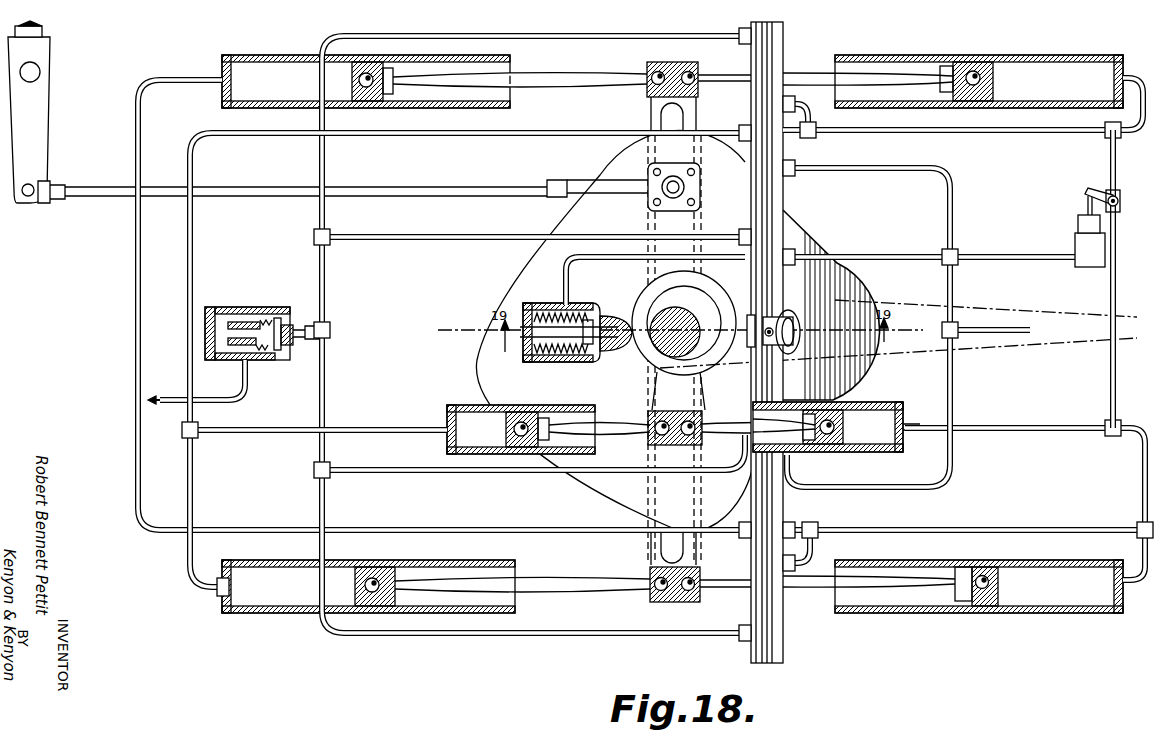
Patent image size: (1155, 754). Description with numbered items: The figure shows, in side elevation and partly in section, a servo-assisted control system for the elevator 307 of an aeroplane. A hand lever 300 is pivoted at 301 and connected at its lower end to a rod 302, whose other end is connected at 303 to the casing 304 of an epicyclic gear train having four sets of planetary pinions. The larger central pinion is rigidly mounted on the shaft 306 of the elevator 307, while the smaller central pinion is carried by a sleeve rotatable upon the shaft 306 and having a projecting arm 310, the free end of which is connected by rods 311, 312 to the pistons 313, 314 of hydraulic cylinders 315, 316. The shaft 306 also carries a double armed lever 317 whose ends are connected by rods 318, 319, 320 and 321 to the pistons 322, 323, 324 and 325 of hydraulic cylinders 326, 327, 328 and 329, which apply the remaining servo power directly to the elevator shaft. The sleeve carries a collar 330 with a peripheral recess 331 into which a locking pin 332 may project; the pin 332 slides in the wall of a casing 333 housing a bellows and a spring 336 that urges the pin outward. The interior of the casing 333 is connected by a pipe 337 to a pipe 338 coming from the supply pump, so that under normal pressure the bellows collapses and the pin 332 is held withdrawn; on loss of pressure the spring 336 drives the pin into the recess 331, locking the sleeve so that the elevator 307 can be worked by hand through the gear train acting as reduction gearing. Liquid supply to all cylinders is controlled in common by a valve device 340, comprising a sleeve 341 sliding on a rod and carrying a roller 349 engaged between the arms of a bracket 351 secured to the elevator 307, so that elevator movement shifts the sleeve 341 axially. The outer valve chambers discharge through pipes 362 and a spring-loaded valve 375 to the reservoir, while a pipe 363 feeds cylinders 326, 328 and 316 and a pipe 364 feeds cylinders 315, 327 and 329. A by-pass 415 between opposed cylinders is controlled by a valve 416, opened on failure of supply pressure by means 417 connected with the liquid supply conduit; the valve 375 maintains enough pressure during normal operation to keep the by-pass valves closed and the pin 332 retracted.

The hand lever 300 is at (44, 29).
The pivot 301 is at (40, 73).
The rod 302 is at (82, 187).
The connection 303 is at (700, 190).
The casing of epicyclic gear train 304 is at (800, 237).
The shaft of the elevator 306 is at (705, 326).
The elevator 307 is at (1007, 350).
The projecting arm 310 is at (698, 398).
The rod 311 is at (707, 428).
The rod 312 is at (604, 433).
The piston 313 is at (836, 453).
The piston 314 is at (526, 454).
The hydraulic cylinder 315 is at (865, 453).
The hydraulic cylinder 316 is at (487, 454).
The double armed lever 317 is at (698, 113).
The rod 318 is at (722, 78).
The rod 319 is at (812, 588).
The rod 320 is at (566, 586).
The rod 321 is at (540, 76).
The piston 322 is at (966, 62).
The piston 323 is at (1000, 587).
The piston 324 is at (374, 566).
The piston 325 is at (388, 66).
The hydraulic cylinder 326 is at (1030, 56).
The hydraulic cylinder 327 is at (1098, 560).
The hydraulic cylinder 328 is at (485, 560).
The hydraulic cylinder 329 is at (292, 56).
The collar 330 is at (716, 300).
The recess 331 is at (609, 318).
The locking pin 332 is at (600, 345).
The casing 333 is at (571, 362).
The spring 336 is at (523, 340).
The pipe 337 is at (563, 283).
The pipe 338 is at (956, 215).
The valve device 340 is at (786, 29).
The sleeve 341 is at (773, 370).
The roller 349 is at (801, 340).
The bracket 351 is at (795, 322).
The pipes 362 is at (625, 39).
The pipe 363 is at (826, 121).
The pipe 364 is at (140, 181).
The spring-loaded valve 375 is at (245, 306).
The by-pass 415 is at (1112, 285).
The valve 416 is at (1109, 196).
The means for opening the valve 417 is at (1080, 245).